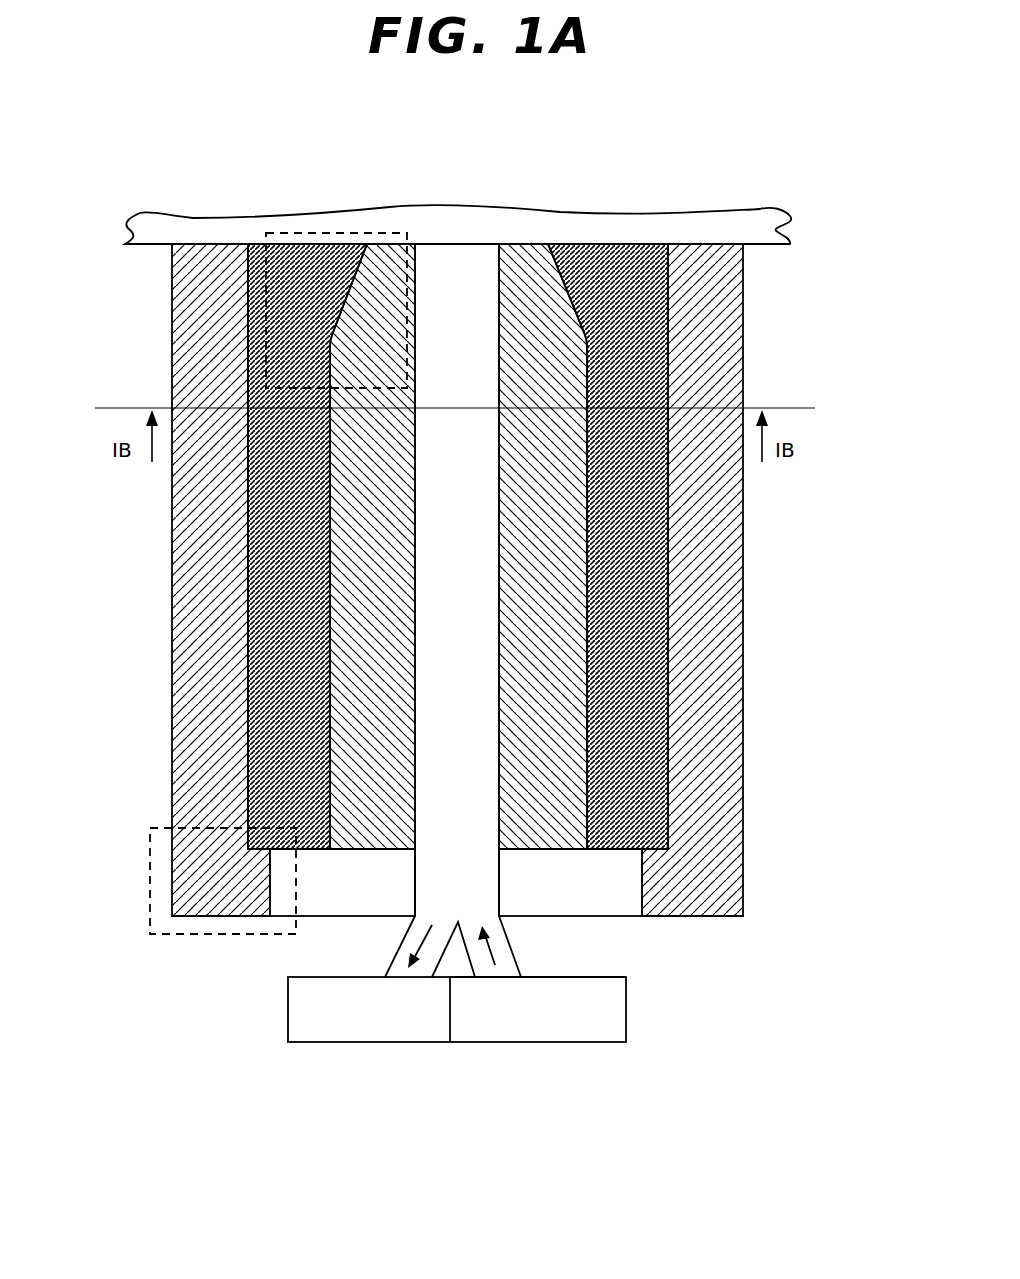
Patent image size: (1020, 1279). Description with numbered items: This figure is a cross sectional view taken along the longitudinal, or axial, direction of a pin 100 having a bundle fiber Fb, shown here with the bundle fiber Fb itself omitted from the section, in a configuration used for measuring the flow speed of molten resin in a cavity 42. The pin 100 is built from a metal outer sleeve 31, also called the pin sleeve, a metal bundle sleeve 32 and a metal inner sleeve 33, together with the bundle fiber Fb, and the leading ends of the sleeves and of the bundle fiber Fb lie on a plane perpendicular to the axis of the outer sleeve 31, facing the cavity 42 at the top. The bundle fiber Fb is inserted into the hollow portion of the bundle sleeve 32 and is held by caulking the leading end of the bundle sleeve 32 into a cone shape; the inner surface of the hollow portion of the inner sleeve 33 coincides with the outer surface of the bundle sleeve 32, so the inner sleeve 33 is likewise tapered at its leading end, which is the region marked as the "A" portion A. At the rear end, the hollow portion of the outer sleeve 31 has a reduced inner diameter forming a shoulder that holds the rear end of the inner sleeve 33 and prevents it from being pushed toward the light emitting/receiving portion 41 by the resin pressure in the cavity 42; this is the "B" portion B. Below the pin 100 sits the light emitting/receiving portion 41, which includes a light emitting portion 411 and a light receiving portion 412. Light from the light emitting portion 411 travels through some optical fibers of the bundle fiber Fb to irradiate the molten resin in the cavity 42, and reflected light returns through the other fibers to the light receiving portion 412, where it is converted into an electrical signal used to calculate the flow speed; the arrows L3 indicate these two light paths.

The pin 100 is at (445, 610).
The cavity 42 is at (768, 225).
The outer sleeve 31 is at (712, 480).
The bundle sleeve 32 is at (552, 567).
The inner sleeve 33 is at (640, 515).
The bundle fiber Fb is at (467, 632).
The light emitting/receiving portion 41 is at (500, 1029).
The light emitting portion 411 is at (512, 1020).
The light receiving portion 412 is at (350, 1022).
The arrows L3 is at (486, 946).
The "A" portion A is at (266, 279).
The "B" portion B is at (148, 868).